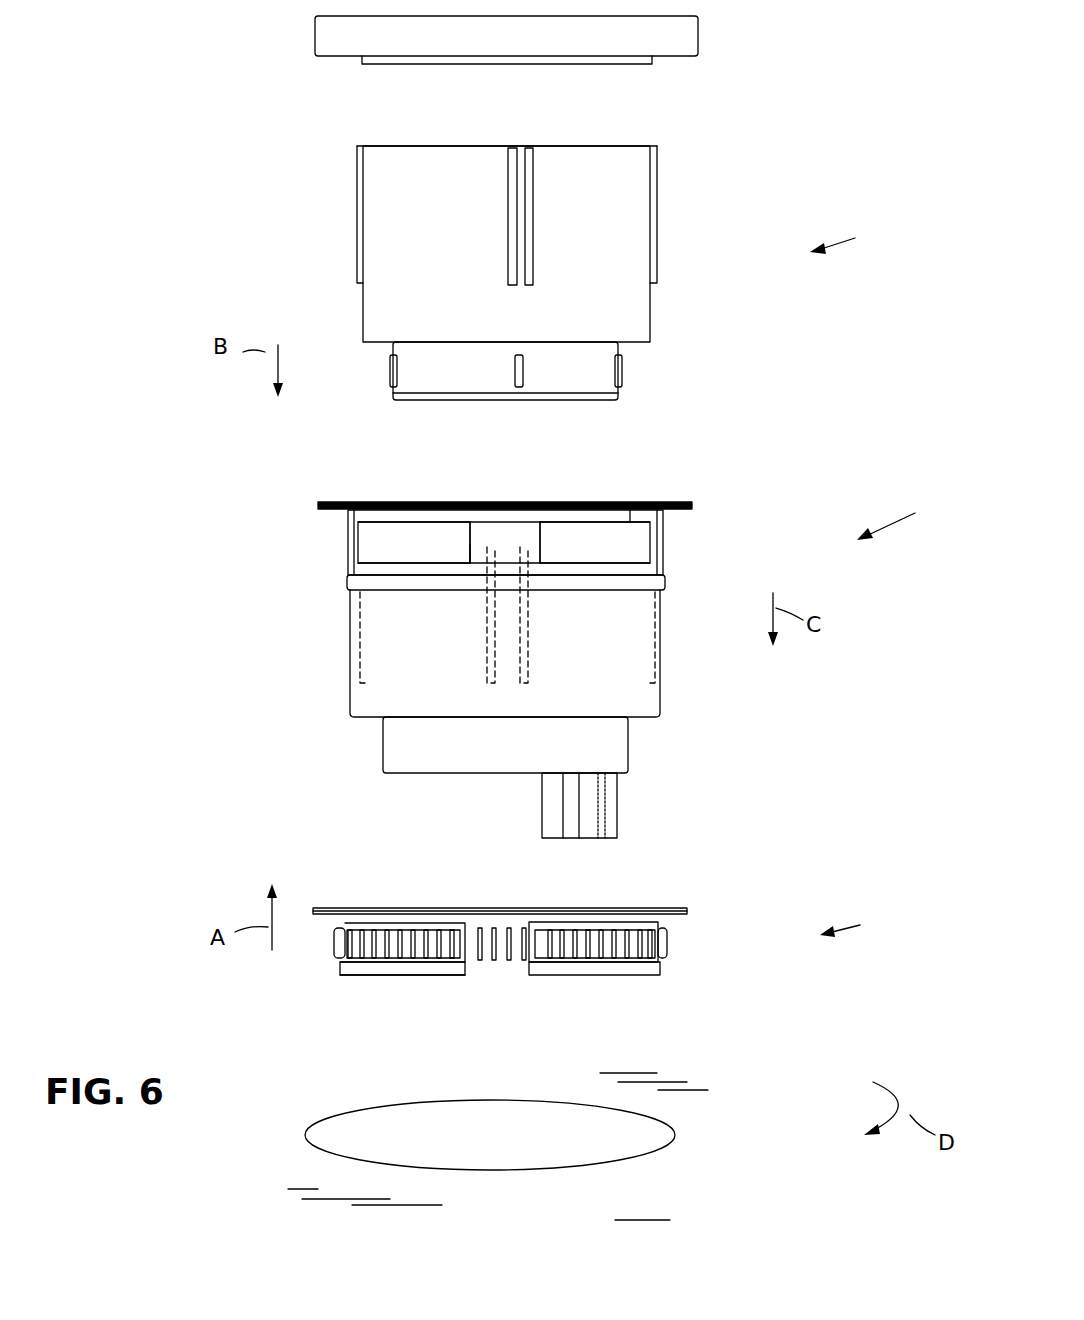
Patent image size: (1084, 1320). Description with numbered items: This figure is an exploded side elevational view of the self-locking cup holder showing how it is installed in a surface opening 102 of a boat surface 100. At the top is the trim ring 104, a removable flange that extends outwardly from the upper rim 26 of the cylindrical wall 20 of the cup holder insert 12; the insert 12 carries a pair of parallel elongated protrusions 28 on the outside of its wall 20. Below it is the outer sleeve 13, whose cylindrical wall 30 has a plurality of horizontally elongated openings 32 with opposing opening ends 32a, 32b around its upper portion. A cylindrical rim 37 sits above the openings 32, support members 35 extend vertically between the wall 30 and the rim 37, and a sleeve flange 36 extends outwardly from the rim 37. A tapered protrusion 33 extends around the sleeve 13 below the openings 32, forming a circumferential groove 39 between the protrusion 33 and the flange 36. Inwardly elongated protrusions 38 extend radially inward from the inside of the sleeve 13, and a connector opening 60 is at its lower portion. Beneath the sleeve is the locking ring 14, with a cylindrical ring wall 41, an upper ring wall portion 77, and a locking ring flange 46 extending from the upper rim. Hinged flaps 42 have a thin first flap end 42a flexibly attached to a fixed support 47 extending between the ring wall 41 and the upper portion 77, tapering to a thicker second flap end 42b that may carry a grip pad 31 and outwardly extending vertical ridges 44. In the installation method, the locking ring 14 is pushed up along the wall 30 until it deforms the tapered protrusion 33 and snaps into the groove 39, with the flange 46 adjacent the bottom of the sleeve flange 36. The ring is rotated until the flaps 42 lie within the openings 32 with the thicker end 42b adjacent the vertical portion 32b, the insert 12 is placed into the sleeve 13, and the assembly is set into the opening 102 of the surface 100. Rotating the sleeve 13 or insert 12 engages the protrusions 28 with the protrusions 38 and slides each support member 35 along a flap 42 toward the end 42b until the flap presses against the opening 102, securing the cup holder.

The trim ring 104 is at (690, 31).
The upper rim 26 is at (623, 145).
The cylindrical wall 20 is at (390, 212).
The elongated protrusions 28 is at (526, 214).
The cup holder insert 12 is at (850, 242).
The sleeve flange 36 is at (690, 504).
The elongated openings 32 is at (418, 527).
The opening end 32b is at (355, 542).
The circumferential groove 39 is at (563, 512).
The support members 35 is at (488, 540).
The cylindrical rim 37 is at (632, 515).
The tapered protrusion 33 is at (665, 583).
The cylindrical wall 30 is at (380, 630).
The opening end 32a is at (470, 548).
The inwardly elongated protrusions 38 is at (490, 630).
The connector opening 60 is at (612, 805).
The outer sleeve 13 is at (905, 524).
The locking ring flange 46 is at (680, 908).
The upper ring wall portion 77 is at (660, 920).
The hinged flaps 42 is at (393, 935).
The first flap end 42a is at (447, 935).
The second flap end 42b is at (345, 962).
The cylindrical ring wall 41 is at (405, 965).
The grip pad 31 is at (350, 955).
The fixed support 47 is at (523, 965).
The vertical ridges 44 is at (597, 948).
The locking ring 14 is at (861, 929).
The surface opening 102 is at (675, 1133).
The boat surface 100 is at (498, 1146).